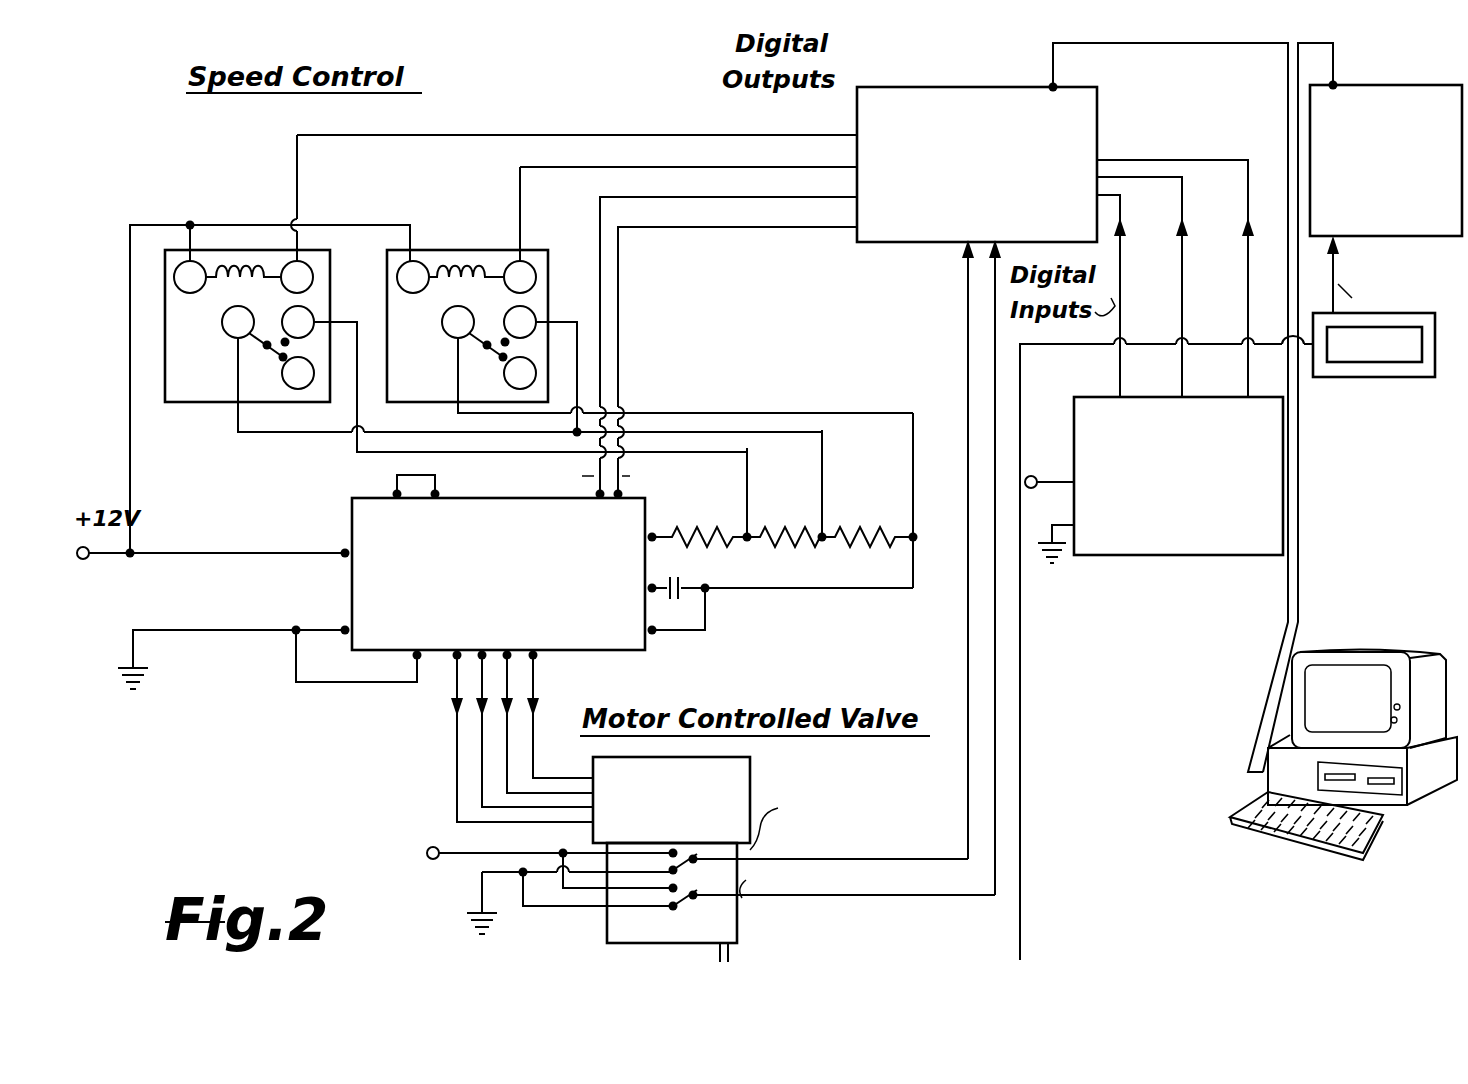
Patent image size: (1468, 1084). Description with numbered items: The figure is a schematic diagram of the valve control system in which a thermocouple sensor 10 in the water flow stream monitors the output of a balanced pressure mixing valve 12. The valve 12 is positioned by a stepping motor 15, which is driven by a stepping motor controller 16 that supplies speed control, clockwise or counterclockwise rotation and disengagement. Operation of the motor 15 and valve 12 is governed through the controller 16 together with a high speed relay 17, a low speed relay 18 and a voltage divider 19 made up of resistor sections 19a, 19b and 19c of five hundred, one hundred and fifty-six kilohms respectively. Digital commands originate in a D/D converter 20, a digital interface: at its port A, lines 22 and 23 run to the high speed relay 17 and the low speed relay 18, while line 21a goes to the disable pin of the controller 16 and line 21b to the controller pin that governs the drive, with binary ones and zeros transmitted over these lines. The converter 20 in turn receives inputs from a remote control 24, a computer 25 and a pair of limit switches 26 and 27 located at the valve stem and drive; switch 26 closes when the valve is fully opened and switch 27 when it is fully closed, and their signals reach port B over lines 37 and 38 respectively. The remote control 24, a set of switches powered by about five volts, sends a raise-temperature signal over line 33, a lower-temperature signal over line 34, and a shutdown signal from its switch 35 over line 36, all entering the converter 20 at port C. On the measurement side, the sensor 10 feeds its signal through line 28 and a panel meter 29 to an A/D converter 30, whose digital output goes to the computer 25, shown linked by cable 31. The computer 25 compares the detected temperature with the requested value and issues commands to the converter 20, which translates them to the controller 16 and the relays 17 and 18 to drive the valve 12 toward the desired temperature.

The sensor 10 is at (736, 952).
The balanced pressure mixing valve 12 is at (610, 916).
The stepping motor 15 is at (736, 772).
The stepping motor controller 16 is at (588, 650).
The high speed relay 17 is at (236, 262).
The low speed relay 18 is at (508, 210).
The voltage divider 19 is at (908, 596).
The resistor section 19a is at (854, 550).
The resistor section 19b is at (798, 550).
The resistor section 19c is at (742, 550).
The D/D converter 20 is at (898, 242).
The line 21a is at (762, 226).
The line 21b is at (697, 198).
The line 22 is at (621, 135).
The line 23 is at (674, 167).
The remote control 24 is at (1178, 555).
The computer 25 is at (1408, 804).
The limit switch 26 is at (688, 866).
The limit switch 27 is at (688, 898).
The line 28 is at (1024, 922).
The panel meter 29 is at (1422, 380).
The A/D converter 30 is at (1418, 84).
The computer cable 31 is at (1272, 680).
The line 33 is at (1120, 386).
The line 34 is at (1182, 372).
The switch 35 is at (1236, 428).
The line 36 is at (1258, 398).
The line 37 is at (964, 336).
The line 38 is at (990, 368).